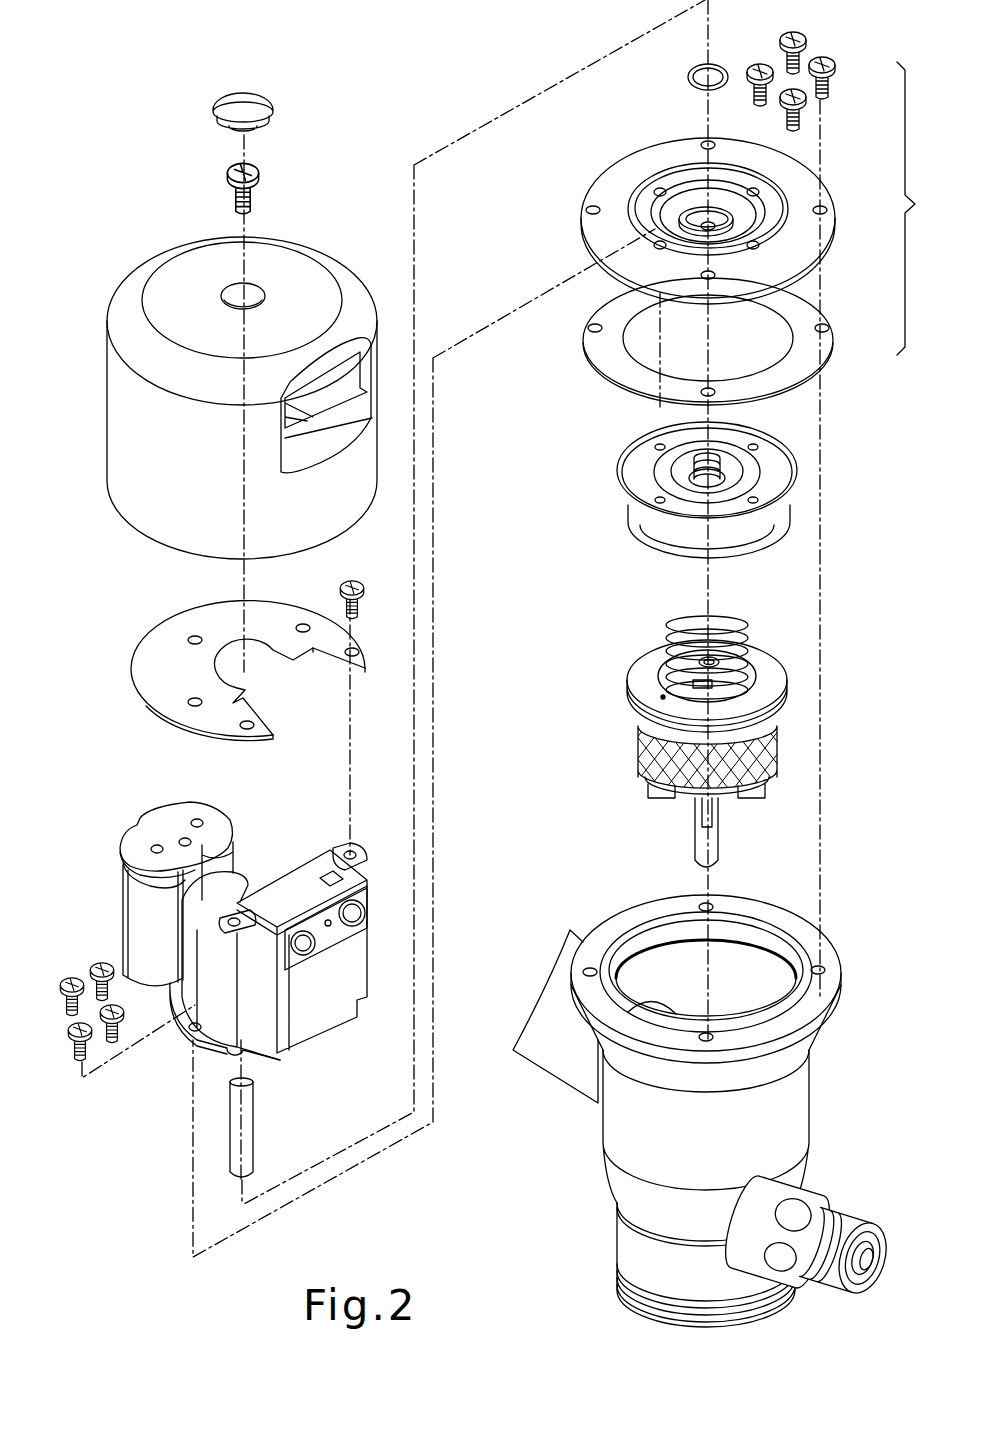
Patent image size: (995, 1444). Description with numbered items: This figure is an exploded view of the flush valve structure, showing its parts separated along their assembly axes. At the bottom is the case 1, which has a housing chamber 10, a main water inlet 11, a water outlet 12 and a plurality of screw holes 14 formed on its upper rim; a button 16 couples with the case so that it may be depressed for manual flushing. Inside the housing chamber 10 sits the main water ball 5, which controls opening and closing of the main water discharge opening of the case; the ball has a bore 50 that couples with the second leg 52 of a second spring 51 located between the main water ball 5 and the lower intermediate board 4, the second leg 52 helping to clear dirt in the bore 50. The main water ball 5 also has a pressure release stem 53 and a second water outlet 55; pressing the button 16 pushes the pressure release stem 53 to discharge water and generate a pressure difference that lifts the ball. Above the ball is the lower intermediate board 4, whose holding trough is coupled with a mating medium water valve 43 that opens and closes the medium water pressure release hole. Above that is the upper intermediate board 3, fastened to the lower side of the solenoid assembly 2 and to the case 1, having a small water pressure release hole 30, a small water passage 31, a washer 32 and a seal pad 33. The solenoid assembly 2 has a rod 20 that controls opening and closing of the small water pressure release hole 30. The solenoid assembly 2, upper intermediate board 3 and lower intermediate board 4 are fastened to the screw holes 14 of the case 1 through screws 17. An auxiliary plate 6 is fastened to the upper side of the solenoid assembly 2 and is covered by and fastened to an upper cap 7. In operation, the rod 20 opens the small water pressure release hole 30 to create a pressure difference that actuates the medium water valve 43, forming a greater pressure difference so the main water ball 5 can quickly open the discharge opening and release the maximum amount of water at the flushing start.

The case 1 is at (703, 1083).
The solenoid assembly 2 is at (257, 872).
The upper intermediate board 3 is at (760, 208).
The lower intermediate board 4 is at (596, 441).
The main water ball 5 is at (618, 632).
The auxiliary plate 6 is at (160, 643).
The upper cap 7 is at (180, 285).
The housing chamber 10 is at (748, 927).
The main water inlet 11 is at (542, 997).
The water outlet 12 is at (637, 1312).
The screw holes 14 is at (823, 970).
The button 16 is at (870, 1272).
The screws 17 is at (822, 57).
The rod 20 is at (248, 1125).
The small water pressure release hole 30 is at (692, 212).
The small water passage 31 is at (703, 220).
The washer 32 is at (687, 72).
The seal pad 33 is at (603, 350).
The medium water valve 43 is at (740, 475).
The bore 50 is at (632, 688).
The second spring 51 is at (678, 620).
The second leg 52 is at (663, 697).
The pressure release stem 53 is at (702, 847).
The second water outlet 55 is at (713, 658).